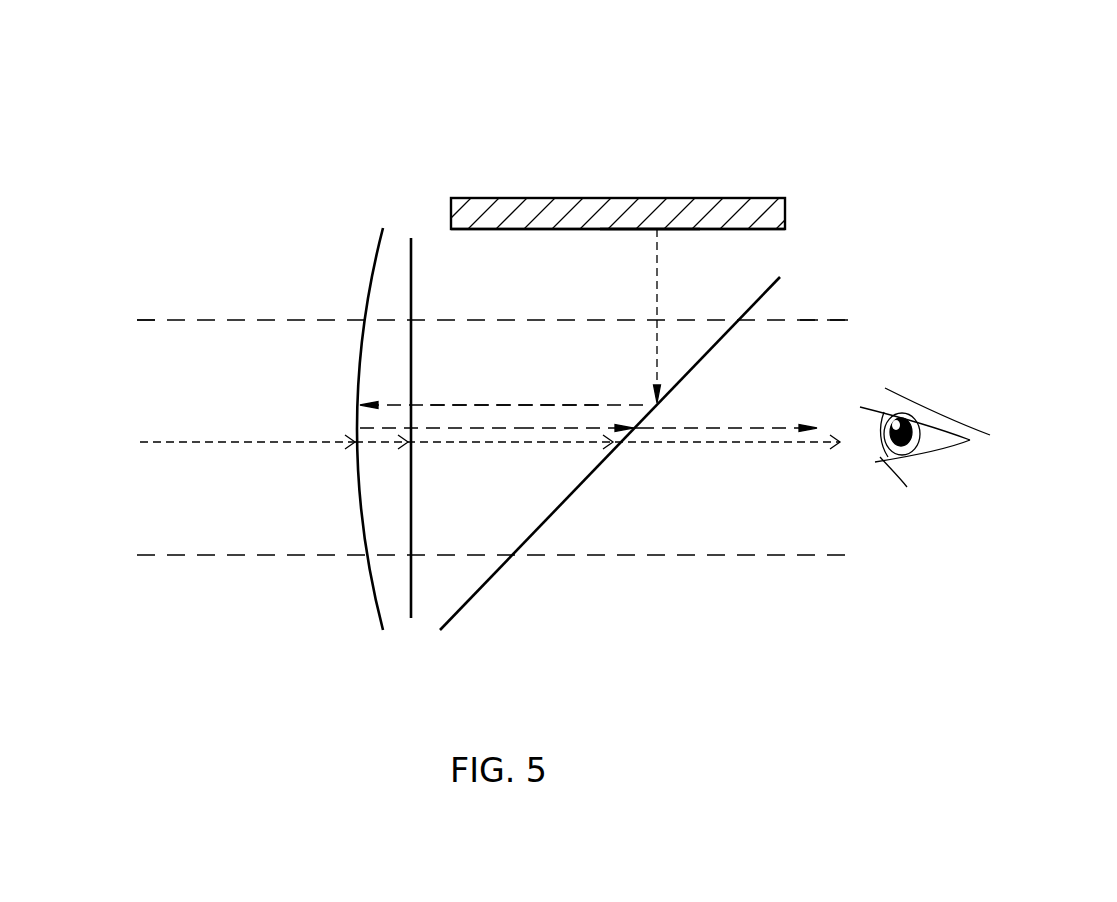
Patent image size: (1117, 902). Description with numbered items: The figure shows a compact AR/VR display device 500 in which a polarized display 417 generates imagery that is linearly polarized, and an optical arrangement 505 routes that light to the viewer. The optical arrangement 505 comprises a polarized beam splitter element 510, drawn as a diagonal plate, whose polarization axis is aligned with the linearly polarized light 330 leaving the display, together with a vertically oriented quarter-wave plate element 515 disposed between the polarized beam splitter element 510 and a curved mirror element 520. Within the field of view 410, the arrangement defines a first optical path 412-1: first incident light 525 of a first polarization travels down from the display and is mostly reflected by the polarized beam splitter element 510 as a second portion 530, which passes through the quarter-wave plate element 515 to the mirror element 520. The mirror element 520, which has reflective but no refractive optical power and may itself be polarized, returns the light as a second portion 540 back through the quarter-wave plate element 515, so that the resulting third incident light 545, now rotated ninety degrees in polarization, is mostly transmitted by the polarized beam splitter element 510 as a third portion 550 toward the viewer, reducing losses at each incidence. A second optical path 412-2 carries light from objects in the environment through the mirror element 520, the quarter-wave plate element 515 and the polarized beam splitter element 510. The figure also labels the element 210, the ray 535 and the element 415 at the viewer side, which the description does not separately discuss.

The compact AR/VR display device 500 is at (985, 112).
The optical arrangement 505 is at (748, 585).
The field of view 410 is at (120, 397).
The first optical path 412-1 is at (708, 420).
The second optical path 412-2 is at (183, 448).
The eye of user 415 is at (940, 403).
The display 210 is at (765, 198).
The linearly polarized light 330 is at (657, 230).
The polarized display 417 is at (620, 238).
The polarized beam splitter element 510 is at (786, 290).
The quarter-wave plate element 515 is at (412, 278).
The mirror element 520 is at (373, 258).
The first incident light 525 is at (650, 397).
The second portion 530 is at (587, 404).
The light ray toward lens 535 is at (358, 400).
The second portion 540 is at (363, 430).
The third incident light 545 is at (612, 427).
The third portion 550 is at (675, 429).